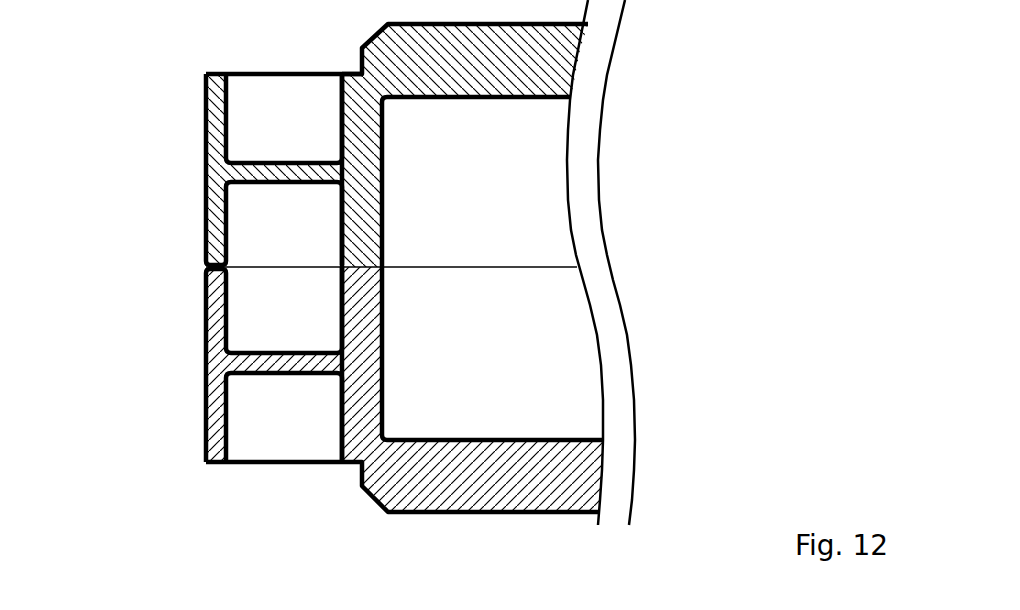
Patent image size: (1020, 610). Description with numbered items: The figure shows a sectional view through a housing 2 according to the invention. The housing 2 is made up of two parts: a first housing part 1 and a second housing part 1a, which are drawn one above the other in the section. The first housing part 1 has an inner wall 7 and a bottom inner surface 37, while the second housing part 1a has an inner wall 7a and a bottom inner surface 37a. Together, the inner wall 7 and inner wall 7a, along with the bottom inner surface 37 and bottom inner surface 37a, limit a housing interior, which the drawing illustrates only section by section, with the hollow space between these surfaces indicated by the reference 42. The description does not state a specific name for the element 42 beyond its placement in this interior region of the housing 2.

The housing 2 is at (68, 61).
The second housing part 1a is at (199, 168).
The first housing part 1 is at (198, 316).
The recess of housing part 42 is at (450, 327).
The inner wall of the second housing part 7a is at (386, 170).
The inner wall of the first housing part 7 is at (388, 385).
The bottom inner surface of the second housing part 37a is at (483, 98).
The bottom inner surface of the first housing part 37 is at (469, 435).